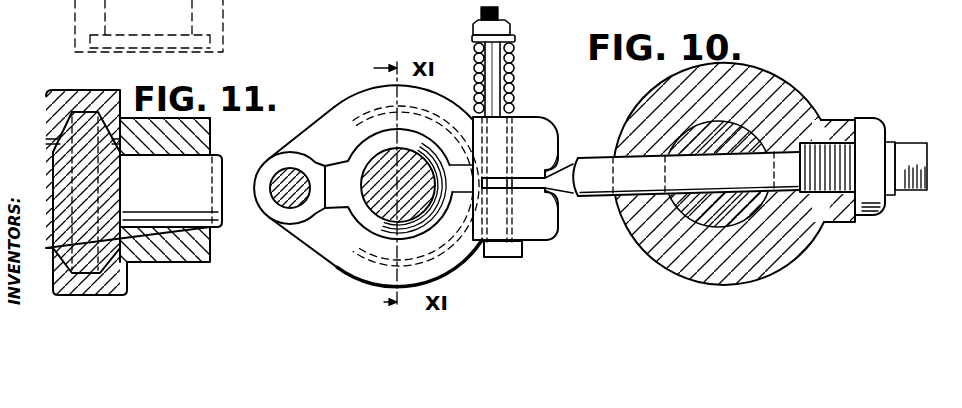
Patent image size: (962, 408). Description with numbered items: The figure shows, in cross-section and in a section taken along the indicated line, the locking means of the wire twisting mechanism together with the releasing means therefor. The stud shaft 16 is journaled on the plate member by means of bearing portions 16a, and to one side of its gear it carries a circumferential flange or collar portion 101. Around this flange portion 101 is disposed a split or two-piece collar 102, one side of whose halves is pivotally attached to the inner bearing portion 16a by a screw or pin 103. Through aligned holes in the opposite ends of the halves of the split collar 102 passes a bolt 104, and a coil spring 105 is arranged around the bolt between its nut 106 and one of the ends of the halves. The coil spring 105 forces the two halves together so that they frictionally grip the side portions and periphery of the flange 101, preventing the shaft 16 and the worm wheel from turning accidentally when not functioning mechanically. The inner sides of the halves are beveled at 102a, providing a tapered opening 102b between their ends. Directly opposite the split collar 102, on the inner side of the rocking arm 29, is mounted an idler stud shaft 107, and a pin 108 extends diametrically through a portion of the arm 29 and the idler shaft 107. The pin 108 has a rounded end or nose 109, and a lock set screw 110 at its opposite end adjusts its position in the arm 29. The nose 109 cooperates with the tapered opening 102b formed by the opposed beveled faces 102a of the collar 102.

In FIG. 11, the stud shaft 16 is at (172, 189).
In FIG. 10, the stud shaft 16 is at (392, 203).
In FIG. 11, the bearing portions 16a is at (175, 250).
In FIG. 10, the arm 29 is at (763, 80).
In FIG. 11, the flange portion 101 is at (80, 151).
In FIG. 10, the flange portion 101 is at (383, 137).
In FIG. 11, the split collar 102 is at (72, 93).
In FIG. 10, the split collar 102 is at (368, 93).
In FIG. 10, the beveled inner sides 102a is at (552, 130).
In FIG. 10, the tapered opening 102b is at (553, 160).
In FIG. 10, the screw or pin 103 is at (290, 198).
In FIG. 10, the bolt 104 is at (516, 85).
In FIG. 10, the coil spring 105 is at (476, 50).
In FIG. 10, the nut 106 is at (509, 31).
In FIG. 10, the idler stud shaft 107 is at (790, 108).
In FIG. 10, the pin 108 is at (650, 192).
In FIG. 10, the rounded nose 109 is at (552, 190).
In FIG. 10, the lock set screw 110 is at (838, 120).